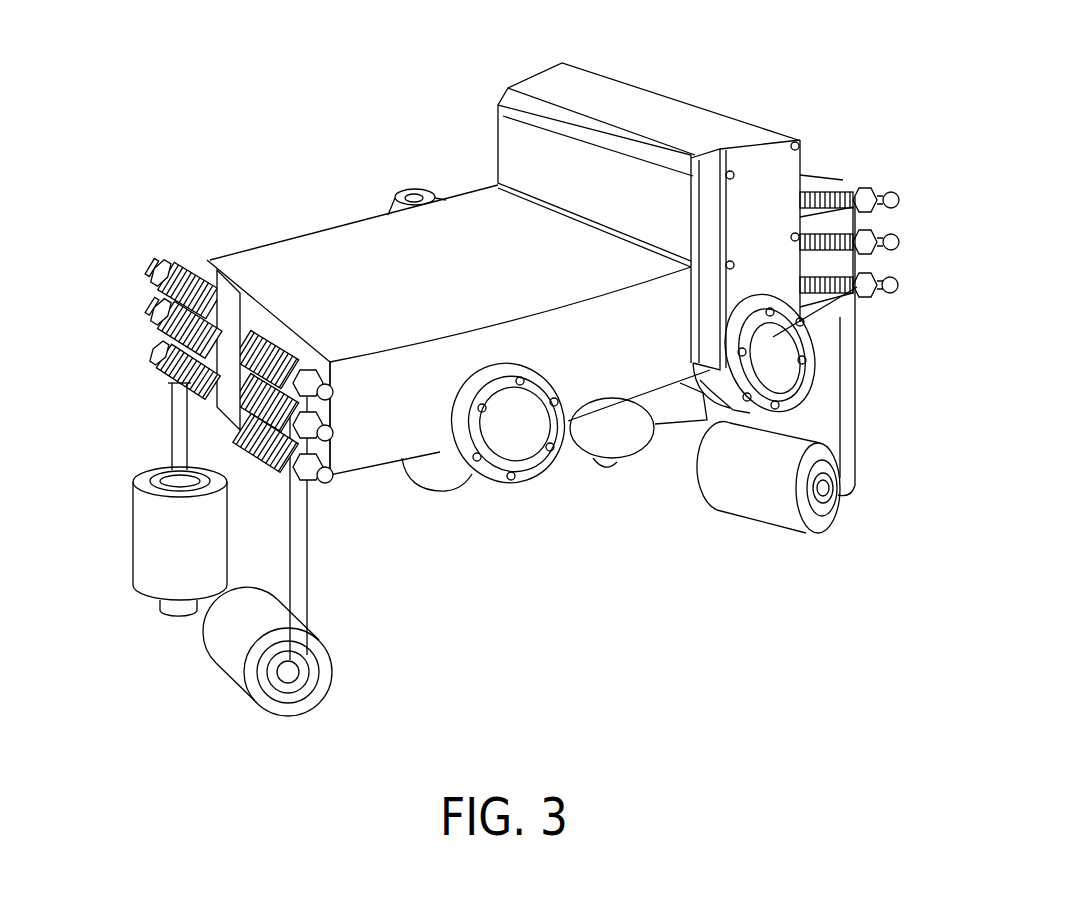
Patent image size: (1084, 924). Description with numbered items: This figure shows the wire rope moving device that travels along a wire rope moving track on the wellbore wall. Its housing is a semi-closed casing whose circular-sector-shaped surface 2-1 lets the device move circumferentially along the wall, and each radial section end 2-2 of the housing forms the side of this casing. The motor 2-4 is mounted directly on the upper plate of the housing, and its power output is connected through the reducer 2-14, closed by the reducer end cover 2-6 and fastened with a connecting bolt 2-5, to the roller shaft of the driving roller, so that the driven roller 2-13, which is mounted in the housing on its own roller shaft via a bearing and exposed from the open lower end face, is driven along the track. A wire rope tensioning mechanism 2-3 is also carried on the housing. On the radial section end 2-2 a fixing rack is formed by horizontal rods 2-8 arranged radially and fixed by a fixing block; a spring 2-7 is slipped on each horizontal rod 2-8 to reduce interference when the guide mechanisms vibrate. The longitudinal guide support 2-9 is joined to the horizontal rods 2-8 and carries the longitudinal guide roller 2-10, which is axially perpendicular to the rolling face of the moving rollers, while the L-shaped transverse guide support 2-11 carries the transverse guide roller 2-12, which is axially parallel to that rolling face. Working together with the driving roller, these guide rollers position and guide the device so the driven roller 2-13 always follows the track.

The circular-sector-shaped surface of the housing 2-1 is at (507, 277).
The radial section end of the housing 2-2 is at (327, 370).
The wire rope tensioning mechanism 2-3 is at (395, 190).
The motor 2-4 is at (633, 117).
The connecting bolt 2-5 is at (800, 150).
The reducer end cover 2-6 is at (878, 285).
The spring 2-7 is at (160, 317).
The horizontal rod 2-8 is at (163, 365).
The longitudinal guide support 2-9 is at (187, 453).
The longitudinal guide roller 2-10 is at (158, 570).
The transverse guide support 2-11 is at (292, 613).
The transverse guide roller 2-12 is at (290, 692).
The driven roller 2-13 is at (437, 482).
The reducer 2-14 is at (753, 152).